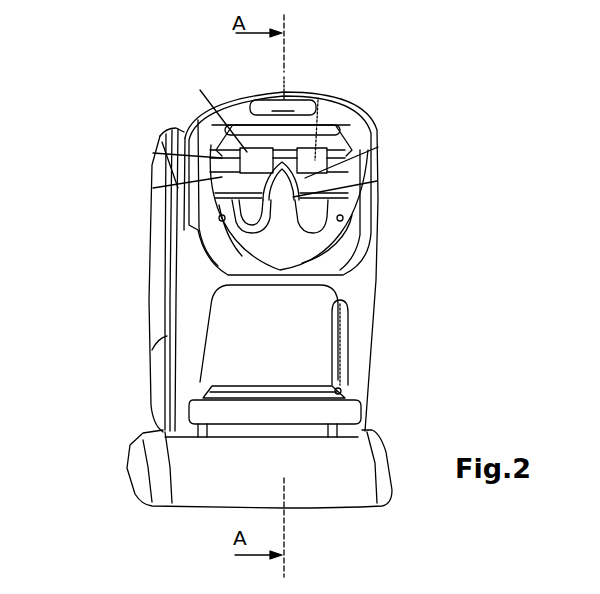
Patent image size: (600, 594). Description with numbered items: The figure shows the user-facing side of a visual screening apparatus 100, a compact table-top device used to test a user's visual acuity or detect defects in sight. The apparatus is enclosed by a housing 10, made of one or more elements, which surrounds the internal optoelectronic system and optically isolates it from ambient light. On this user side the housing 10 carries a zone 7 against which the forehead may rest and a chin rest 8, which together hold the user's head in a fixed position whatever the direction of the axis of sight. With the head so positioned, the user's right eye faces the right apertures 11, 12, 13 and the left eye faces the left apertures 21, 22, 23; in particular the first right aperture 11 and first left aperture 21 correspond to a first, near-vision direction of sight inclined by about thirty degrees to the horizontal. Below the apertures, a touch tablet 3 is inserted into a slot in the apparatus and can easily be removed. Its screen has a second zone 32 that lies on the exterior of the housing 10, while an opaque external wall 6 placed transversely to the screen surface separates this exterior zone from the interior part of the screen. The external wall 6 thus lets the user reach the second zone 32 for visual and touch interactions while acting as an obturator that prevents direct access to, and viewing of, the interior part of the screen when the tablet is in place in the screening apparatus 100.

The visual screening apparatus 100 is at (112, 272).
The housing 10 is at (337, 95).
The zone against which the forehead may rest 7 is at (262, 99).
The right aperture 12 is at (318, 100).
The left aperture 22 is at (200, 90).
The left aperture 23 is at (153, 153).
The first left aperture 21 is at (153, 188).
The right aperture 13 is at (378, 147).
The first right aperture 11 is at (378, 181).
The chin rest 8 is at (310, 248).
The opaque external wall 6 is at (292, 332).
The second zone 32 is at (313, 378).
The touch tablet 3 is at (258, 417).